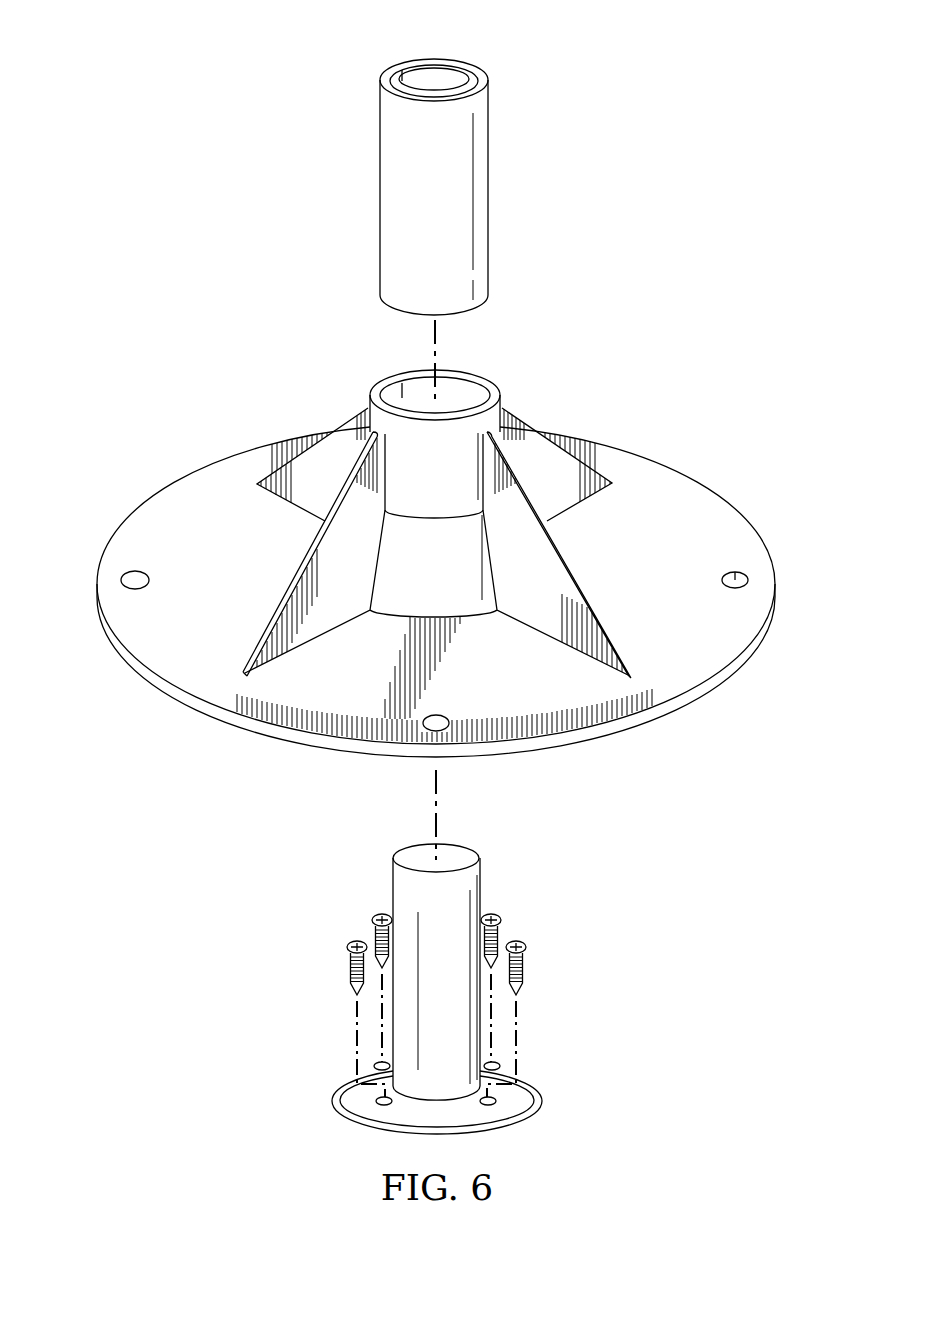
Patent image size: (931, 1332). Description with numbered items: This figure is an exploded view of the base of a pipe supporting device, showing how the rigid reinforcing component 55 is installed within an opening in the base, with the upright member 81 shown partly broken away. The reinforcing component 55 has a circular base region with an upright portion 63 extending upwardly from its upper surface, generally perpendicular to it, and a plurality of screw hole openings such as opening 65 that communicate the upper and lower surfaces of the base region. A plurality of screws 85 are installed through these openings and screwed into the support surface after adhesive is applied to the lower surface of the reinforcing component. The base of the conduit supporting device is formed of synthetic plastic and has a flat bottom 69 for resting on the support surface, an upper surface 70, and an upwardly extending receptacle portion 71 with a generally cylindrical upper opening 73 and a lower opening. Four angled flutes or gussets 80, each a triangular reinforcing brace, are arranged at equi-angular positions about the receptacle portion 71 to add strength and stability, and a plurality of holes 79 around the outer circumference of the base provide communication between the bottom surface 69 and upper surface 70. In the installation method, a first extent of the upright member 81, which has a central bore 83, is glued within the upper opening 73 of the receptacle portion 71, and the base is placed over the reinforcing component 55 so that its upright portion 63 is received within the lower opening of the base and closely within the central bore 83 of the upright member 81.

The reinforcing component 55 is at (452, 989).
The upright portion 63 is at (480, 895).
The screw hole opening 65 is at (494, 1098).
The flat bottom 69 is at (617, 733).
The upper surface 70 is at (436, 601).
The receptacle portion 71 is at (446, 469).
The upper opening 73 is at (476, 398).
The holes 79 is at (735, 574).
The gussets 80 is at (543, 448).
The upright member 81 is at (467, 157).
The central bore 83 is at (471, 84).
The screws 85 is at (522, 968).